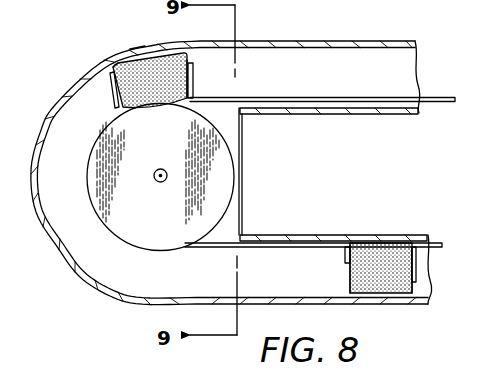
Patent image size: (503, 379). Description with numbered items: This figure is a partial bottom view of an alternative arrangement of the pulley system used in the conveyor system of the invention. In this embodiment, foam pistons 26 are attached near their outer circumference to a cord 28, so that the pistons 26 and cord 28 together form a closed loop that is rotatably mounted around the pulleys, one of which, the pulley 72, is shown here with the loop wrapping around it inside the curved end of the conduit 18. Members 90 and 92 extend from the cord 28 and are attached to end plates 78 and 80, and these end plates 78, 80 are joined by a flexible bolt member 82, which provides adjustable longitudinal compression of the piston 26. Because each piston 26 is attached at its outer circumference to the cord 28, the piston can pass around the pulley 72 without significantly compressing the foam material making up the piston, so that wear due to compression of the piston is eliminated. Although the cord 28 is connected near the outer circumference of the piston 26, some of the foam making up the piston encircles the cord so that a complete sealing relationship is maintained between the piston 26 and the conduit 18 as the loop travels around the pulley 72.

The track 18 is at (77, 278).
The piston 26 is at (163, 68).
The cord 28 is at (382, 101).
The pulley 72 is at (163, 218).
The end plate 78 is at (196, 72).
The end plate 80 is at (112, 78).
The flexible bolt member 82 is at (137, 50).
The member 90 is at (195, 90).
The member 92 is at (110, 100).